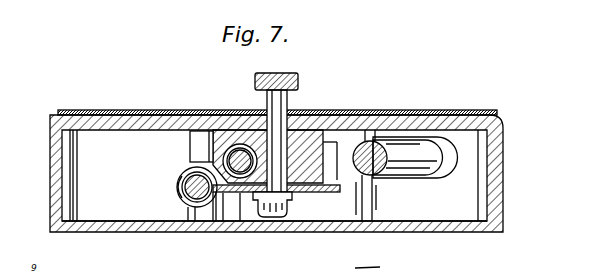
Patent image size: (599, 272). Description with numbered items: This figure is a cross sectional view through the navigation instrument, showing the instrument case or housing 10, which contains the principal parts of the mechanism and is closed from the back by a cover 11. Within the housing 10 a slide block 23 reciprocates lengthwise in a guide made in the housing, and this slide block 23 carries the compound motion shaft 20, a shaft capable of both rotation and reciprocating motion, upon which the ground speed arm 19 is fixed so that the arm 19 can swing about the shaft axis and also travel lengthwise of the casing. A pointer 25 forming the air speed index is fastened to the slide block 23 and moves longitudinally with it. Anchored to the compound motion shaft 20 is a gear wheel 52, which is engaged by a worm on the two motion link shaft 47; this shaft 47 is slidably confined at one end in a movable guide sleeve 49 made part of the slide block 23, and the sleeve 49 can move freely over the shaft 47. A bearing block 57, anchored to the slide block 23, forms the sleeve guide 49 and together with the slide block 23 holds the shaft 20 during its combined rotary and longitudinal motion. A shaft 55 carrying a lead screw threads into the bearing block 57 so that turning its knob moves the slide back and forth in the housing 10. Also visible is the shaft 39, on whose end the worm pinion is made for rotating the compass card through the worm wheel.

The instrument case or housing 10 is at (367, 122).
The cover 11 is at (471, 226).
The ground speed arm 19 is at (300, 80).
The compound motion shaft 20 is at (289, 100).
The slide block 23 is at (346, 111).
The pointer 25 is at (242, 110).
The shaft 39 is at (405, 175).
The two motion link shaft 47 is at (178, 182).
The guide sleeve 49 is at (197, 210).
The gear wheel 52 is at (314, 193).
The shaft 55 is at (209, 150).
The bearing block 57 is at (308, 184).